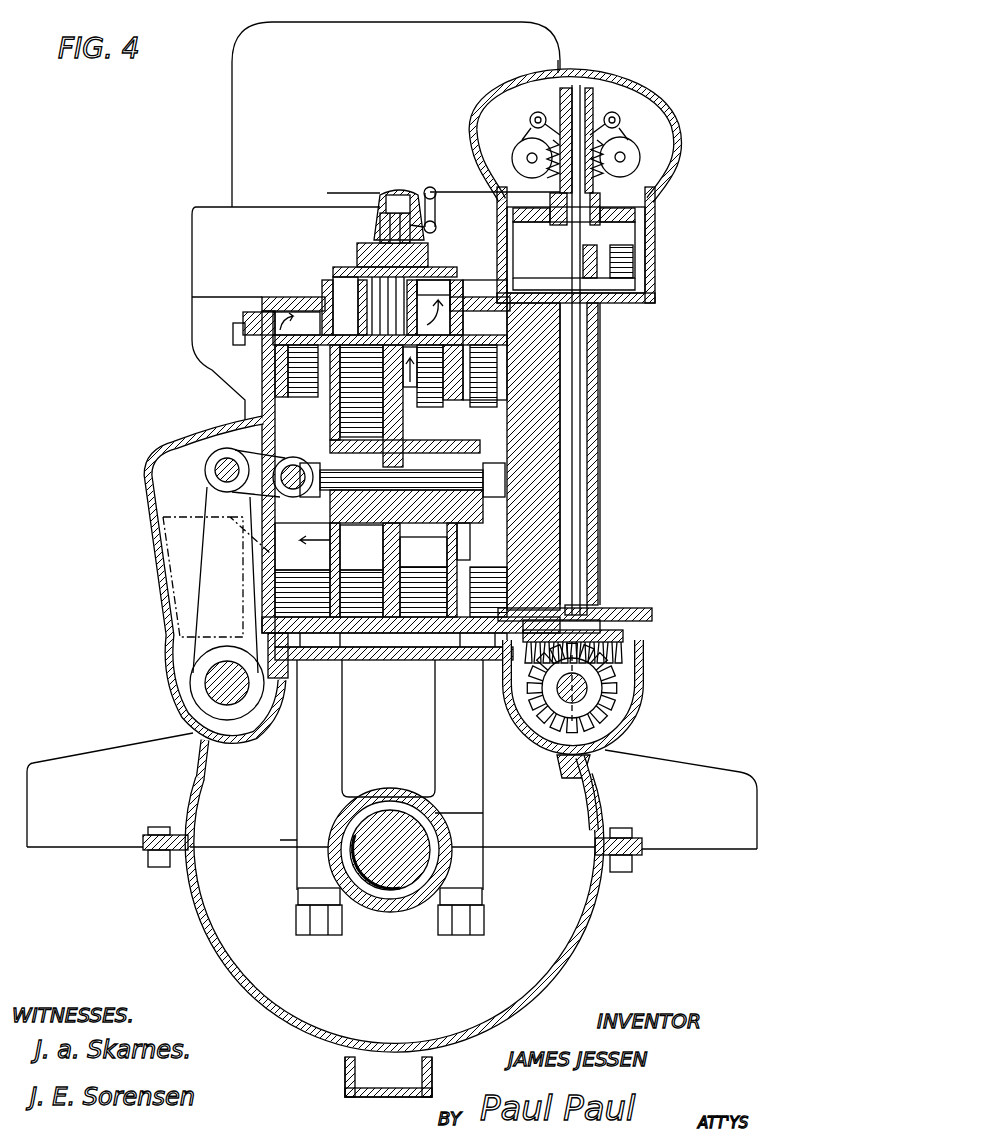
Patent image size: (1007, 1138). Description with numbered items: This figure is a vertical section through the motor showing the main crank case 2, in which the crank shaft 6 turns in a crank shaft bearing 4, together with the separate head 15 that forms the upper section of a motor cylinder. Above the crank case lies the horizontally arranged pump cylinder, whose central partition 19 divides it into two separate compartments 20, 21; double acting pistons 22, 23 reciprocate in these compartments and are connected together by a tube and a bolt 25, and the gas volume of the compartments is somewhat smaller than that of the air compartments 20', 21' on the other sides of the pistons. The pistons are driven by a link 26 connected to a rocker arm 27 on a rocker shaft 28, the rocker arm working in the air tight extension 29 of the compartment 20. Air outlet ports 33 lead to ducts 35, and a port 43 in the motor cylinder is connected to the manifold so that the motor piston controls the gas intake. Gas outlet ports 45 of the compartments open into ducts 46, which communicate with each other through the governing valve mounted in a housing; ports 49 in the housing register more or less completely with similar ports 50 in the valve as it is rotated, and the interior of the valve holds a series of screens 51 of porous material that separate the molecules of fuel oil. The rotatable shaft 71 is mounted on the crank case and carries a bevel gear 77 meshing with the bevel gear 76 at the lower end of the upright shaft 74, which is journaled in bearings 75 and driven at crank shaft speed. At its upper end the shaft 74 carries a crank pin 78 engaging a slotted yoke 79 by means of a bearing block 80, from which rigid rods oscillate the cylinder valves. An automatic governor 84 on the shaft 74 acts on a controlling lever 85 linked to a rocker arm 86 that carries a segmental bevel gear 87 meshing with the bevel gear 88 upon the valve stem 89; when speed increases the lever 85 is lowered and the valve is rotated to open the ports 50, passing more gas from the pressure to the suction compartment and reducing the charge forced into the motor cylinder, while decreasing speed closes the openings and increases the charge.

The main crank case 2 is at (600, 790).
The crank shaft bearing 4 is at (385, 790).
The crank shaft 6 is at (380, 908).
The head 15 is at (376, 221).
The central partition 19 is at (370, 570).
The compartment 20 is at (356, 570).
The air compartment 20' is at (302, 546).
The compartment 21 is at (423, 592).
The air compartment 21' is at (488, 586).
The double acting piston 22 is at (302, 593).
The double acting piston 23 is at (435, 570).
The bolt 25 is at (402, 493).
The link 26 is at (265, 465).
The rocker arm 27 is at (216, 580).
The rocker shaft 28 is at (205, 685).
The air tight extension 29 is at (175, 545).
The air outlet port 33 is at (287, 370).
The duct 35 is at (305, 297).
The port 43 is at (433, 376).
The gas outlet port 45 is at (366, 406).
The duct 46 is at (445, 276).
The port 49 is at (395, 269).
The valve port 50 is at (433, 274).
The screen 51 is at (348, 277).
The rotatable shaft 71 is at (590, 688).
The upright shaft 74 is at (580, 537).
The bearing 75 is at (600, 418).
The bevel gear 76 is at (617, 651).
The bevel gear 77 is at (613, 707).
The crank pin 78 is at (637, 265).
The slotted yoke 79 is at (637, 215).
The bearing block 80 is at (583, 259).
The automatic governor 84 is at (614, 113).
The controlling lever 85 is at (452, 190).
The rocker arm 86 is at (437, 227).
The segmental bevel gear 87 is at (339, 194).
The bevel gear 88 is at (398, 190).
The valve stem 89 is at (385, 226).